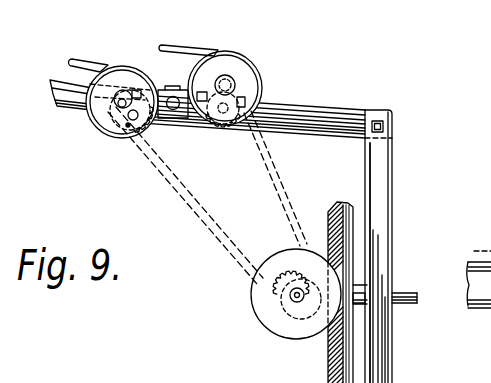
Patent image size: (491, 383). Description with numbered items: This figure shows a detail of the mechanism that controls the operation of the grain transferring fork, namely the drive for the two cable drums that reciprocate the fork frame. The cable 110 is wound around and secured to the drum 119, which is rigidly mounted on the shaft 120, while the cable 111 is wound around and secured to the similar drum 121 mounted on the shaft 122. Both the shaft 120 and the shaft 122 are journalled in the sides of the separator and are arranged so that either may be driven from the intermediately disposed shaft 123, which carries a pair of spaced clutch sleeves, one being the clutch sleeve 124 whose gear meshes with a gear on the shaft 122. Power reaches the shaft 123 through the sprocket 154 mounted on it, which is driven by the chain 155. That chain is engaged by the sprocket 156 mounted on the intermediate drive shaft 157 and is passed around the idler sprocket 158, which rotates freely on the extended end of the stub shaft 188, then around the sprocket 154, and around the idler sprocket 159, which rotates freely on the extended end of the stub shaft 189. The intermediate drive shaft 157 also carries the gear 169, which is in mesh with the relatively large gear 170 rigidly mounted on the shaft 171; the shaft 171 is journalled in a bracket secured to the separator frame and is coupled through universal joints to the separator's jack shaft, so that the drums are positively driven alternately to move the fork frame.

The cable 110 is at (188, 43).
The cable 111 is at (92, 61).
The drum 119 is at (258, 72).
The shaft 120 is at (232, 82).
The drum 121 is at (116, 109).
The shaft 122 is at (118, 108).
The shaft 123 is at (173, 110).
The clutch sleeve 124 is at (481, 311).
The sprocket 154 is at (178, 89).
The chain 155 is at (280, 178).
The sprocket 156 is at (285, 328).
The intermediate drive shaft 157 is at (294, 298).
The idler sprocket 158 is at (256, 104).
The idler sprocket 159 is at (137, 95).
The gear 169 is at (258, 300).
The gear 170 is at (352, 240).
The shaft 171 is at (402, 292).
The stub shaft 188 is at (214, 124).
The stub shaft 189 is at (143, 118).